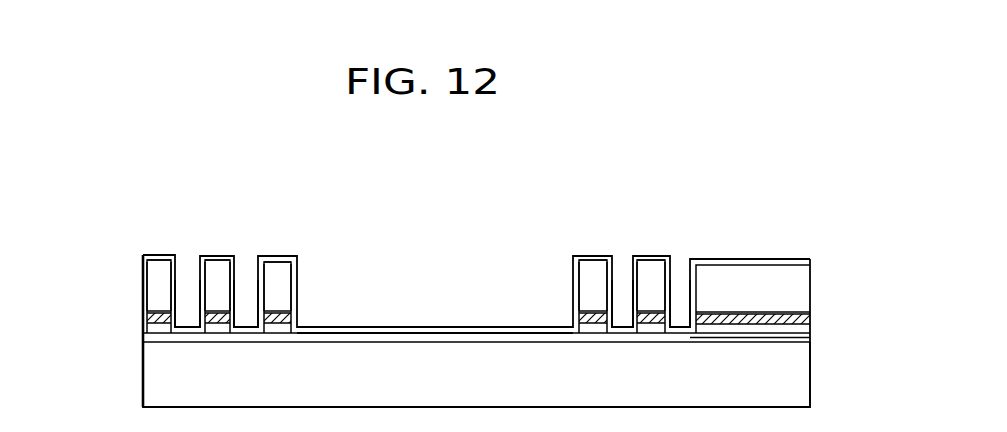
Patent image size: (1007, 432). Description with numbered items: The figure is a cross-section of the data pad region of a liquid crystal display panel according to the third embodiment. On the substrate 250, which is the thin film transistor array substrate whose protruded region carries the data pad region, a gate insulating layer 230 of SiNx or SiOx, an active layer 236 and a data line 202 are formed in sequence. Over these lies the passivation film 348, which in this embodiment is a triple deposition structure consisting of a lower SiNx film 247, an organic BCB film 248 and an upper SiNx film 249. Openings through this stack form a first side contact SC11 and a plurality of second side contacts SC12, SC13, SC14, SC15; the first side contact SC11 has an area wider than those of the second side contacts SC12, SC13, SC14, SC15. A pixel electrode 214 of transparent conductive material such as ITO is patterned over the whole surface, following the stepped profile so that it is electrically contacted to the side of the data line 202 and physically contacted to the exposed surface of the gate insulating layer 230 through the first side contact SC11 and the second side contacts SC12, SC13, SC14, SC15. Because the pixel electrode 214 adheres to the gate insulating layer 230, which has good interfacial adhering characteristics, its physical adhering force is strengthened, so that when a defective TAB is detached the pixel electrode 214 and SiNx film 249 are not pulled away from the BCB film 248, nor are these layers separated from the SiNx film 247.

The pixel electrode 214 is at (160, 256).
The passivation film 348 is at (336, 287).
The SiNx film 249 is at (143, 262).
The BCB film 248 is at (143, 287).
The SiNx film 247 is at (143, 311).
The data line 202 is at (810, 318).
The active layer 236 is at (810, 334).
The gate insulating layer 230 is at (810, 343).
The substrate 250 is at (797, 386).
The first side contact SC11 is at (440, 254).
The second side contact SC12 is at (187, 250).
The second side contact SC13 is at (247, 250).
The second side contact SC14 is at (619, 250).
The second side contact SC15 is at (681, 250).